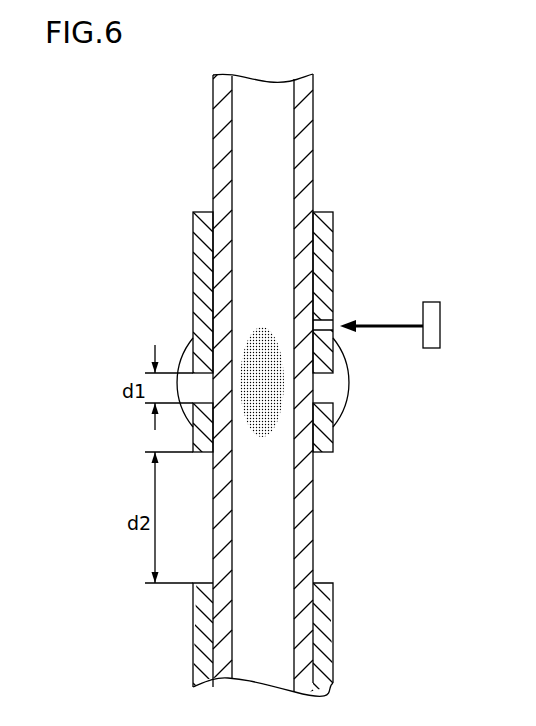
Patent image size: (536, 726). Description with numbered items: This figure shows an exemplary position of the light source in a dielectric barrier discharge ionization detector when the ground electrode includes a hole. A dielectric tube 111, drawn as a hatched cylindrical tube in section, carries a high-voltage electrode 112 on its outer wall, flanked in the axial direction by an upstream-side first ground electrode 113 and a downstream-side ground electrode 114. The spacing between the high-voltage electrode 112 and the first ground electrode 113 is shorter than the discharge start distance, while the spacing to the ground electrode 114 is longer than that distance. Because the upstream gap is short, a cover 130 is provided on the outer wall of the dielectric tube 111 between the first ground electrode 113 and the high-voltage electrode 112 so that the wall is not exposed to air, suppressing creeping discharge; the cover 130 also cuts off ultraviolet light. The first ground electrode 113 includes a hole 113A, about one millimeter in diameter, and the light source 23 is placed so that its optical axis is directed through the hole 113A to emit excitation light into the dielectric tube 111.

The dielectric tube 111 is at (220, 150).
The high-voltage electrode 112 is at (333, 448).
The ground electrode 113 is at (333, 251).
The hole 113A is at (333, 324).
The ground electrode 114 is at (325, 606).
The cover 130 is at (347, 359).
The light source 23 is at (432, 300).